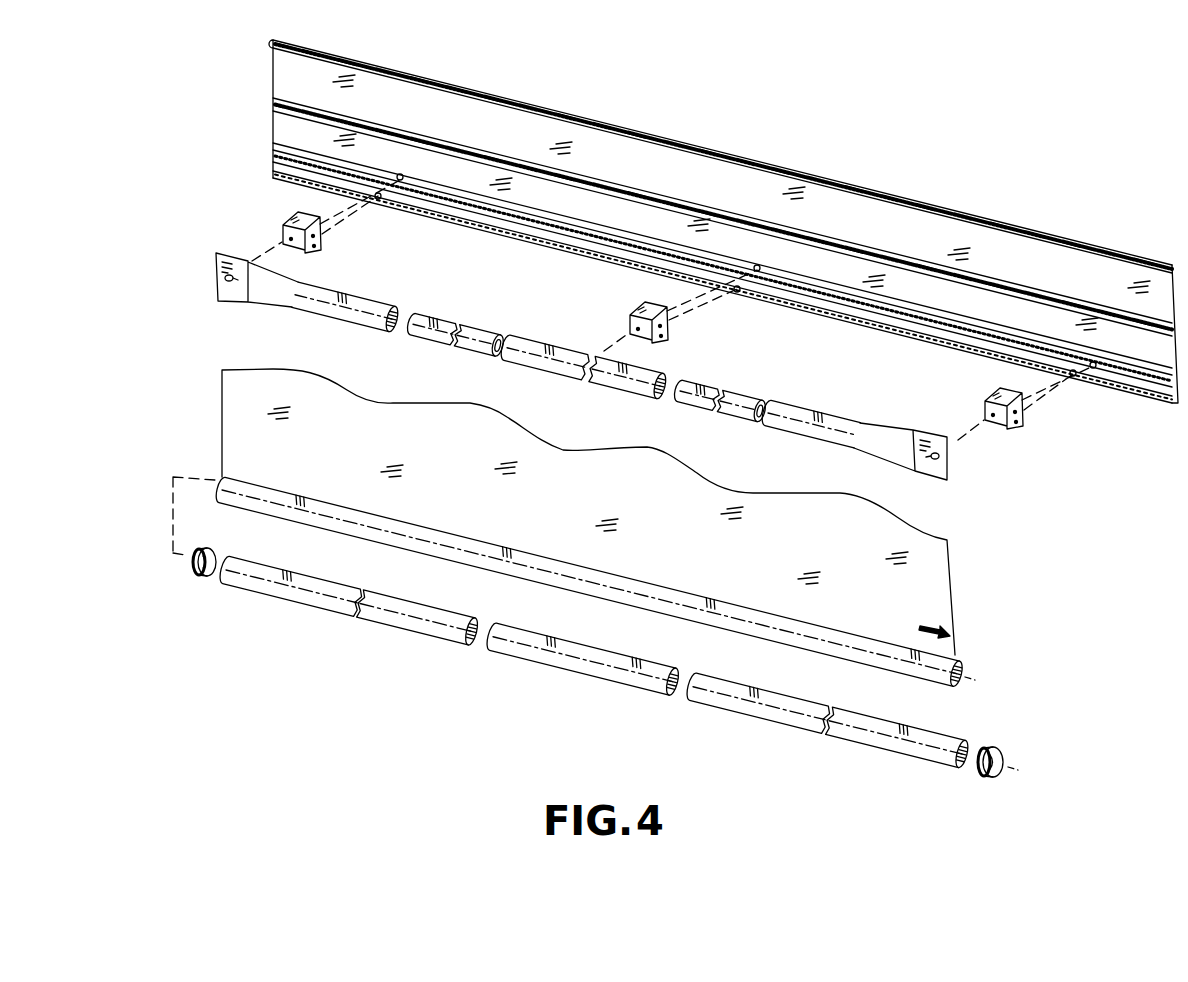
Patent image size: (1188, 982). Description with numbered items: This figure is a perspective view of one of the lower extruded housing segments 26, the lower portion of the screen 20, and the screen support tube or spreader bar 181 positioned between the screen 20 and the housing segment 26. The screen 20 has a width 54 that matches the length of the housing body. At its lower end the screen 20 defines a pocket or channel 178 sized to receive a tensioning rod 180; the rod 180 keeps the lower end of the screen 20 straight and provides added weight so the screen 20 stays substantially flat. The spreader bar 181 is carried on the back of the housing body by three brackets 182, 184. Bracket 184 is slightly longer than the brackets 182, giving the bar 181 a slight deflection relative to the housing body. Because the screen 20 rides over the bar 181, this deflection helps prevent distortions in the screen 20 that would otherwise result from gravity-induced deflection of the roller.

The lower extruded housing segment 26 is at (1014, 249).
The bracket 182 is at (347, 247).
The bracket 184 is at (611, 301).
The screen support tube or spreader bar 181 is at (829, 388).
The width 54 is at (238, 441).
The screen 20 is at (651, 573).
The pocket or channel 178 is at (975, 664).
The tensioning rod 180 is at (1034, 741).